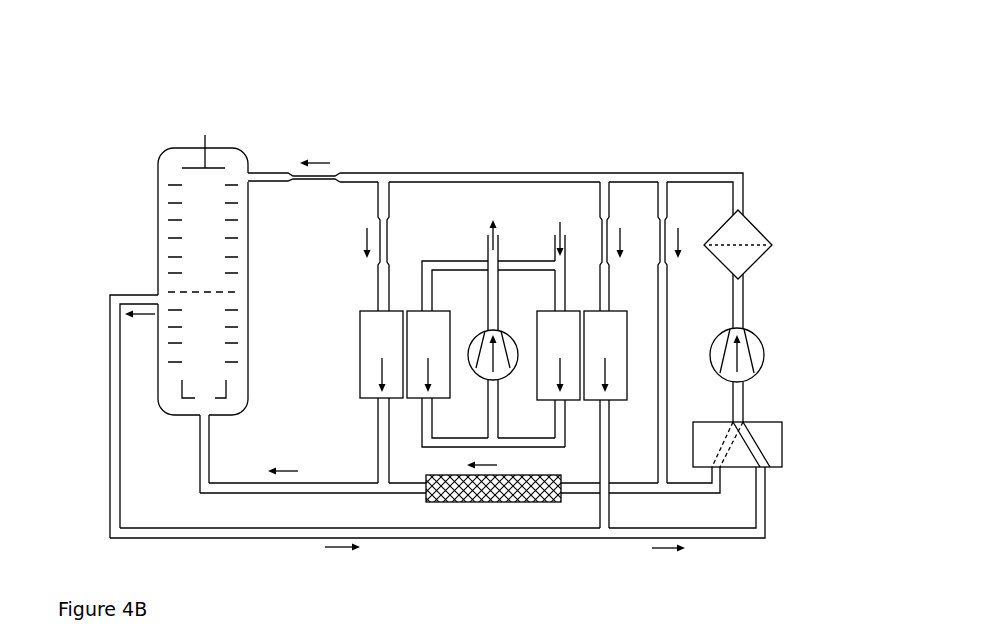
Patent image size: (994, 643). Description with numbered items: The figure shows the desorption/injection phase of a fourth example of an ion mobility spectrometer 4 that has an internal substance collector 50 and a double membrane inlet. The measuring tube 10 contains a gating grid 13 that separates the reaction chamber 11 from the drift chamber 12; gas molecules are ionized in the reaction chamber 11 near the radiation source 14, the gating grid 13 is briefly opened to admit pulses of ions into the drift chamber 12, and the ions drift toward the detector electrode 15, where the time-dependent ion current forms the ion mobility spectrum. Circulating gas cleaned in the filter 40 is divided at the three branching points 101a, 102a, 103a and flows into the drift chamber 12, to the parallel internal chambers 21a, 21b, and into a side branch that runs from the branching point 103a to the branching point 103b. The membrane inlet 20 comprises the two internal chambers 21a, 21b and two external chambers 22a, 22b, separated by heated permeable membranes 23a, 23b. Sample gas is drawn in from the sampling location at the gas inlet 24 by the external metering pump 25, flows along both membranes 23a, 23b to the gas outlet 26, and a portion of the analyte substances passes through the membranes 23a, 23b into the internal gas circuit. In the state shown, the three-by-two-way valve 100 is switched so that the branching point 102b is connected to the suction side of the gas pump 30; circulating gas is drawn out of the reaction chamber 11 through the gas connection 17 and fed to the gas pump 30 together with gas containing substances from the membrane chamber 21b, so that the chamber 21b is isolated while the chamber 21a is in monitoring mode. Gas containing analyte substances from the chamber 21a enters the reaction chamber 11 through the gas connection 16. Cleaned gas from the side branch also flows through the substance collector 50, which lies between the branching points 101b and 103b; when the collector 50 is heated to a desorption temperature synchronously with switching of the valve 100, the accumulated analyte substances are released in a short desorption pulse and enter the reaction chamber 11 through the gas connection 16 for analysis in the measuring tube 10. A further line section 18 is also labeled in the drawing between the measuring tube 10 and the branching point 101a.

The ion mobility spectrometer 4 is at (417, 77).
The measuring tube 10 is at (113, 182).
The reaction chamber 11 is at (203, 336).
The drift chamber 12 is at (203, 229).
The gating grid 13 is at (228, 288).
The radiation source 14 is at (233, 393).
The detector electrode 15 is at (213, 163).
The gas connection 16 is at (203, 416).
The gas connection 17 is at (158, 294).
The tank outlet line 18 is at (250, 179).
The membrane inlet 20 is at (465, 233).
The internal chamber 21a is at (381, 354).
The external chamber 22a is at (428, 354).
The permeable membrane 23a is at (381, 354).
The internal chamber 21b is at (605, 355).
The external chamber 22b is at (558, 355).
The permeable membrane 23b is at (623, 355).
The gas inlet 24 is at (560, 323).
The external metering pump 25 is at (477, 330).
The gas outlet 26 is at (494, 318).
The gas pump 30 is at (760, 368).
The filter 40 is at (760, 260).
The substance collector 50 is at (452, 502).
The 3/2-way valve 100 is at (761, 461).
The branching point 101a is at (382, 177).
The branching point 101b is at (382, 485).
The branching point 102a is at (603, 177).
The branching point 102b is at (606, 529).
The branching point 103a is at (663, 177).
The branching point 103b is at (664, 487).